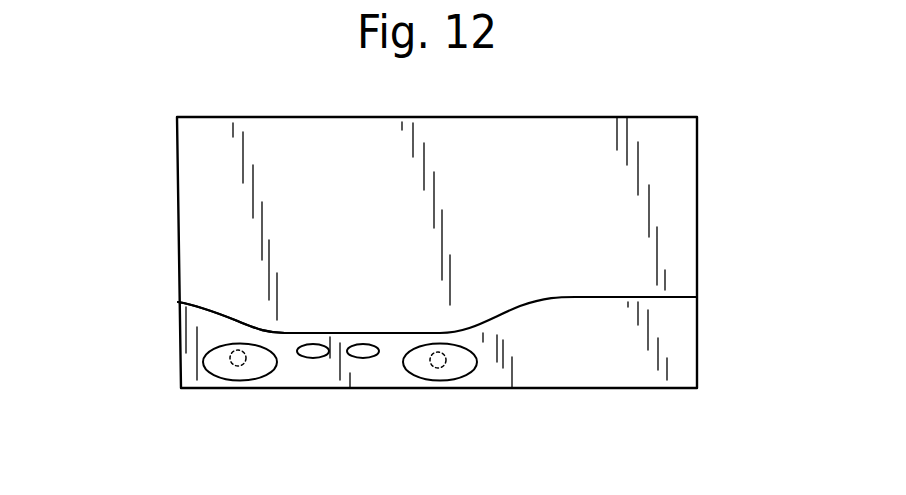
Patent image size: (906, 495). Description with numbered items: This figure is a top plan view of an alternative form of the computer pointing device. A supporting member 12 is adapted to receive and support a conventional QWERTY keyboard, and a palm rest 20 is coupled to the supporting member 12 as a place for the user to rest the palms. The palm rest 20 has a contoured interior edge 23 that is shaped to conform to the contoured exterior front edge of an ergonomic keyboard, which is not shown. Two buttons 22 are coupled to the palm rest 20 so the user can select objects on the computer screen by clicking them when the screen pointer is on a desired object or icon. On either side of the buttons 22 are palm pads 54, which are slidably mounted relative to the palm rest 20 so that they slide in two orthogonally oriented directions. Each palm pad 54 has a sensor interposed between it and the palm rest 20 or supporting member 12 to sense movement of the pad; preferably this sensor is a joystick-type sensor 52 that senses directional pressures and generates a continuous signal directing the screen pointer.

The supporting member 12 is at (697, 232).
The palm rest 20 is at (672, 333).
The buttons 22 is at (361, 344).
The contoured interior edge 23 is at (230, 313).
The joystick-type sensor 52 is at (245, 367).
The palm pads 54 is at (203, 362).